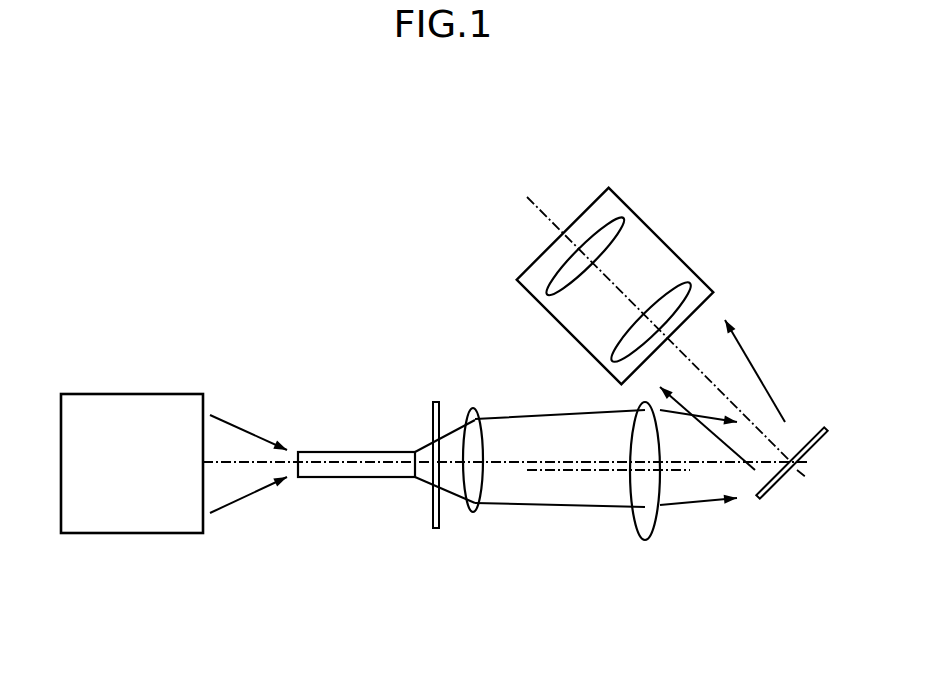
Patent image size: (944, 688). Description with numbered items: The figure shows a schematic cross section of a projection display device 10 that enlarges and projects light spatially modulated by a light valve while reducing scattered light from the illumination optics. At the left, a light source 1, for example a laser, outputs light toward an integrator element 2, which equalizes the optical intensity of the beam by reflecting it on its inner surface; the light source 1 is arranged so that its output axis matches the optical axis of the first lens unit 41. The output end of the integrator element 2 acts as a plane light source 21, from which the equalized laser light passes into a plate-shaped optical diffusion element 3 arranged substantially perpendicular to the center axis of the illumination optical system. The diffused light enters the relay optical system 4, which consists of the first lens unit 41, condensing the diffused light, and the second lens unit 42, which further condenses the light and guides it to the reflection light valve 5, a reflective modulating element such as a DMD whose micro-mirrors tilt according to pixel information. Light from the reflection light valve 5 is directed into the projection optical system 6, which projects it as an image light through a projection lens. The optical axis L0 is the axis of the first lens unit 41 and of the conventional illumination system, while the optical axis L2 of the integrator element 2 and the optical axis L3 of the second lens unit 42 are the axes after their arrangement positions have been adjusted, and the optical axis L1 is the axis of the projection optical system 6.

The projection display device 10 is at (422, 150).
The light source 1 is at (130, 534).
The integrator element 2 is at (342, 478).
The plane light source 21 is at (415, 451).
The optical diffusion element 3 is at (435, 529).
The relay optical system 4 is at (561, 525).
The first lens unit 41 is at (473, 513).
The second lens unit 42 is at (645, 503).
The reflection light valve 5 is at (778, 489).
The projection optical system 6 is at (674, 253).
The optical axis L0 is at (531, 460).
The optical axis L1 is at (546, 207).
The optical axis L2 is at (240, 462).
The optical axis L3 is at (595, 473).